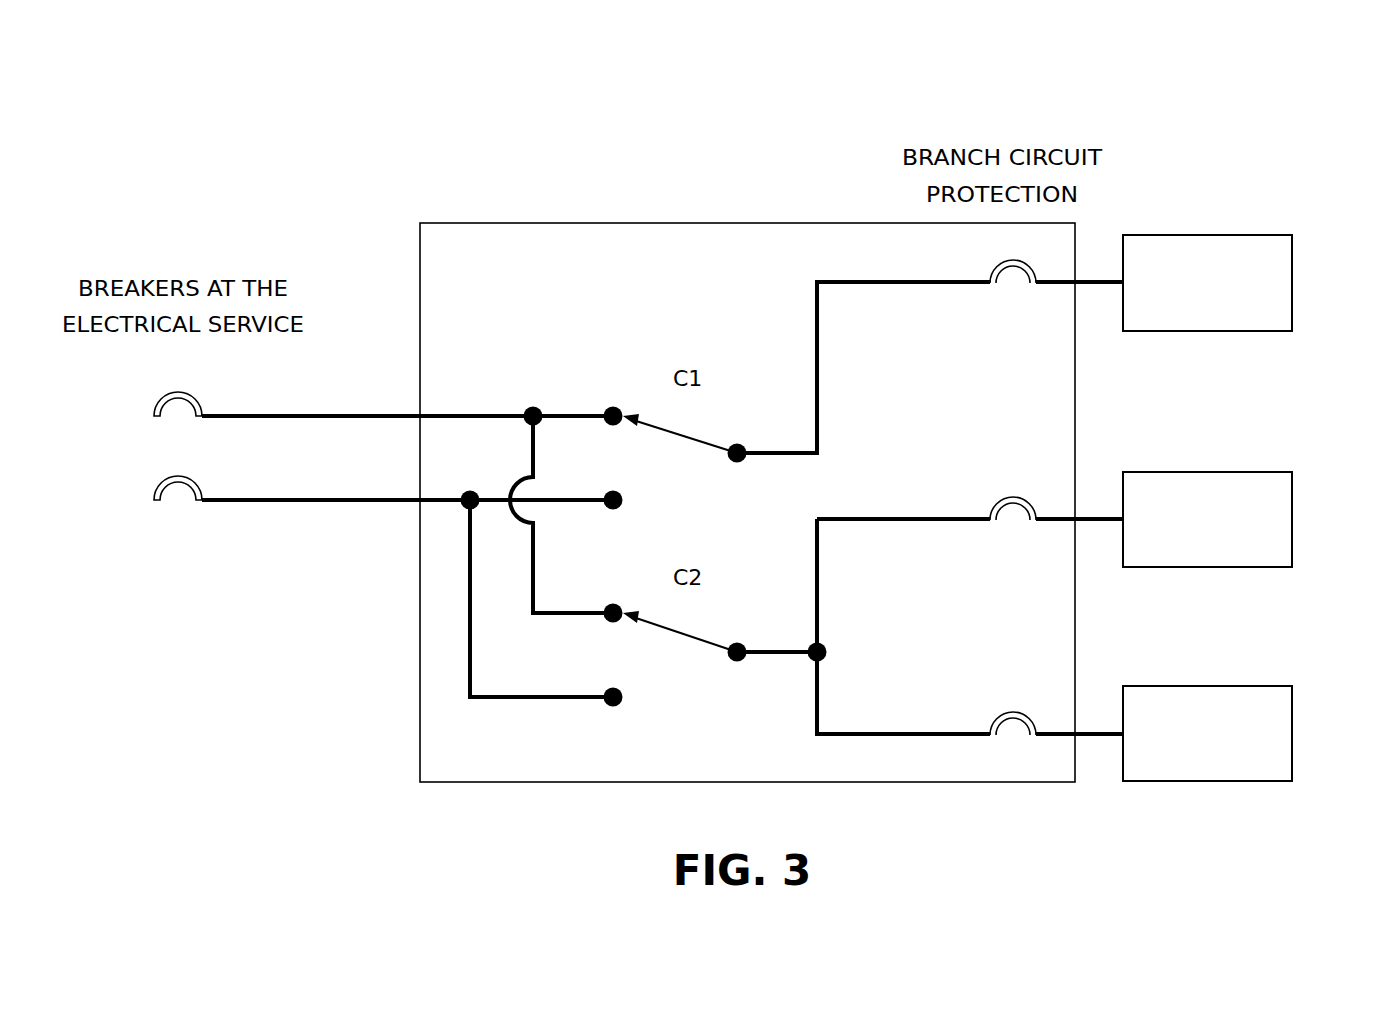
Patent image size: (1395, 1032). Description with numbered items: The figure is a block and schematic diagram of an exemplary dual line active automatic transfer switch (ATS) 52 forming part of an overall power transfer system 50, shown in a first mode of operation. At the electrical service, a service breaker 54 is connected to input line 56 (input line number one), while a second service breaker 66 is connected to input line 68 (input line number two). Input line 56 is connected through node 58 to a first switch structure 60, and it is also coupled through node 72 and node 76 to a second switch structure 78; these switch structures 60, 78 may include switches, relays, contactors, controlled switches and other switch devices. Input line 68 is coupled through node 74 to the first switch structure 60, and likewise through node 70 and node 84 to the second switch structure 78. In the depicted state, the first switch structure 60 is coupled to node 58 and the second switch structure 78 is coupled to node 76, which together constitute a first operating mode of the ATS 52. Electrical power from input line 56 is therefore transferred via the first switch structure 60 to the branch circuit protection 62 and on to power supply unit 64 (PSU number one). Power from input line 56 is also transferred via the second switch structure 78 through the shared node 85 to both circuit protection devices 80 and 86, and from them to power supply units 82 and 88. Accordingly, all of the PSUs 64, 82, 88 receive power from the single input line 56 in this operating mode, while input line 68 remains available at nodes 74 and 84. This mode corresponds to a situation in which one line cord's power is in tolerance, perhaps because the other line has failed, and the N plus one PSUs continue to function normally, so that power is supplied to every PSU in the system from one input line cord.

The power transfer system 50 is at (1285, 117).
The dual line active automatic transfer switch 52 is at (618, 223).
The service breaker 54 is at (177, 392).
The input line 56 is at (300, 418).
The node 58 is at (613, 405).
The first switch structure 60 is at (697, 433).
The branch circuit protection 62 is at (1018, 270).
The power supply unit 64 is at (1292, 282).
The second service breaker 66 is at (177, 476).
The input line 68 is at (300, 502).
The node 70 is at (470, 492).
The node 72 is at (533, 405).
The node 74 is at (613, 492).
The node 76 is at (613, 602).
The second switch structure 78 is at (697, 637).
The circuit protection device 80 is at (1020, 497).
The power supply unit 82 is at (1292, 519).
The node 84 is at (613, 687).
The shared node 85 is at (828, 646).
The circuit protection device 86 is at (1020, 712).
The power supply unit 88 is at (1292, 734).